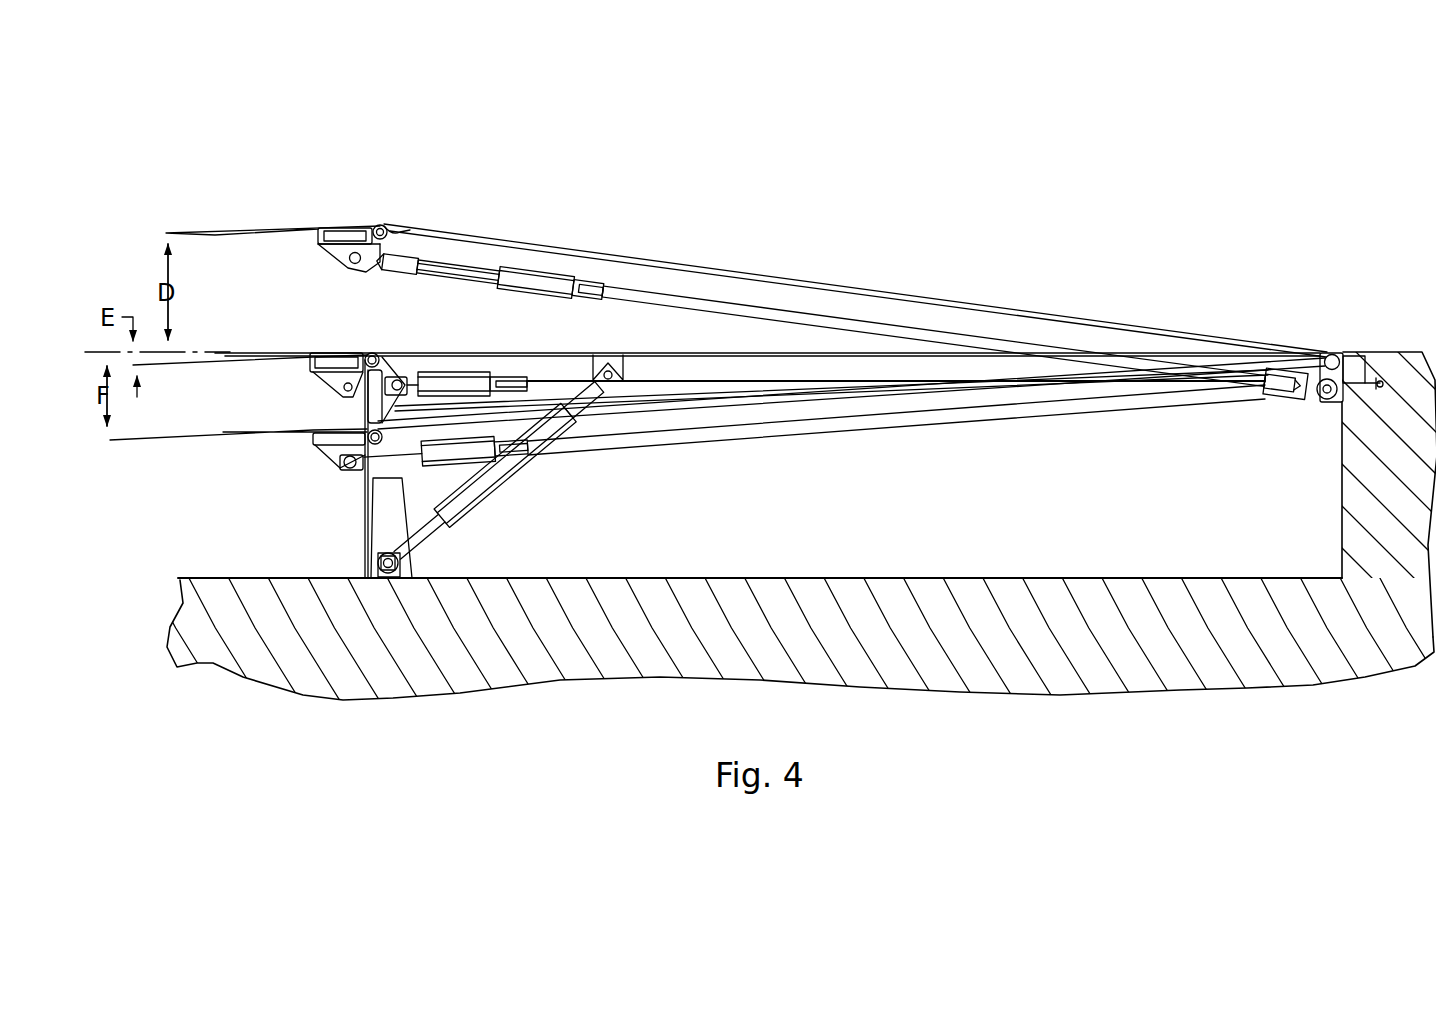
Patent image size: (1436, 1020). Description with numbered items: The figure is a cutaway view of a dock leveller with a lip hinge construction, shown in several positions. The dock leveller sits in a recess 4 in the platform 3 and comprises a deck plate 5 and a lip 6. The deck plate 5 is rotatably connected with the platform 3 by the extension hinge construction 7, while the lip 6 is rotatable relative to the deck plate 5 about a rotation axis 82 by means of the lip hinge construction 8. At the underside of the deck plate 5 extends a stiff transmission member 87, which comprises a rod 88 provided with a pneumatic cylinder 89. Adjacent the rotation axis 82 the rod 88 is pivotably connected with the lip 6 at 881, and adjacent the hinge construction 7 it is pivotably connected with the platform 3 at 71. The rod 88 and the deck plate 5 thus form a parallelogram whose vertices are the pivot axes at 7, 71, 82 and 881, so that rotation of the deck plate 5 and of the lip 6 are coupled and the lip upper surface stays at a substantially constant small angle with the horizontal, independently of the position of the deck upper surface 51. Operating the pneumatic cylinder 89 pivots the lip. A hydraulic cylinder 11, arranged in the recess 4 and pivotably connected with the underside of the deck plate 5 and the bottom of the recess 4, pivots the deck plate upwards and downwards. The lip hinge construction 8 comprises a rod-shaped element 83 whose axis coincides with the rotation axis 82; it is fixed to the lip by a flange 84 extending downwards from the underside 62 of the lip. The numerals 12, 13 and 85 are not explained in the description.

The platform 3 is at (1400, 400).
The recess 4 is at (1033, 577).
The deck plate 5 is at (487, 235).
The lip 6 is at (258, 230).
The hinge construction 7 is at (1327, 354).
The lip hinge construction 8 is at (332, 233).
The hydraulic cylinder 11 is at (507, 484).
The cylinder pivot 12 is at (628, 368).
The floor pivot 13 is at (400, 562).
The deck upper surface 51 is at (430, 227).
The underside of the lip 62 is at (301, 233).
The pivotable connection with the platform 71 is at (1318, 398).
The rotation axis 82 is at (378, 225).
The rod-shaped element 83 is at (418, 228).
The flange 84 is at (337, 251).
The hinge plate 85 is at (315, 238).
The transmission member 87 is at (614, 272).
The rod 88 is at (472, 279).
The pneumatic cylinder 89 is at (536, 286).
The pivotable connection with the lip 881 is at (357, 266).